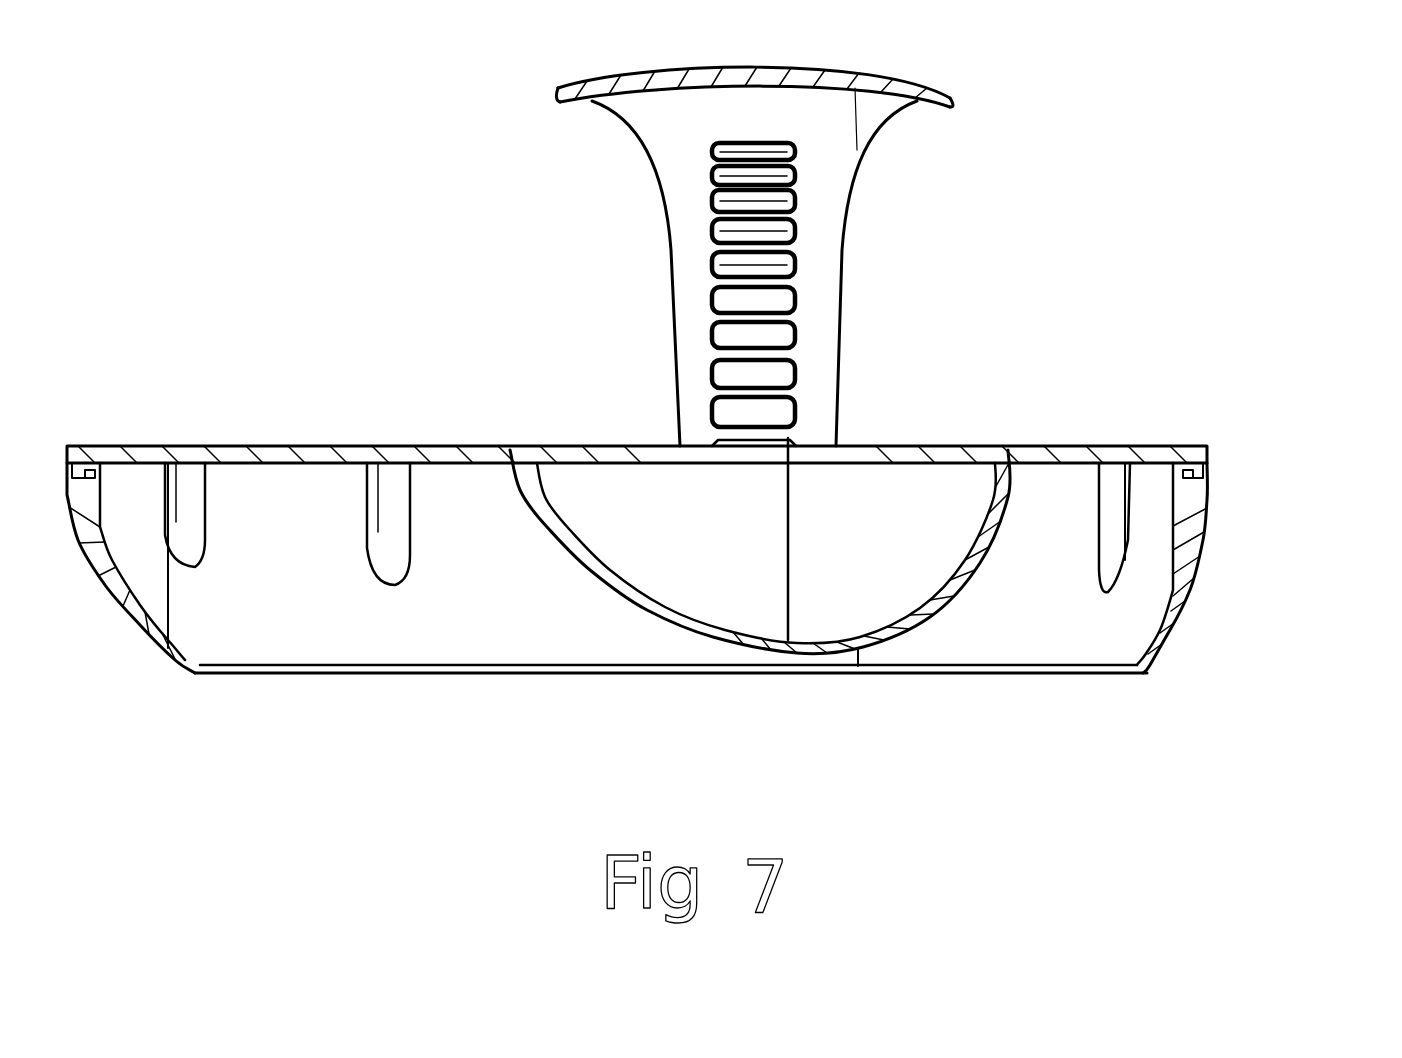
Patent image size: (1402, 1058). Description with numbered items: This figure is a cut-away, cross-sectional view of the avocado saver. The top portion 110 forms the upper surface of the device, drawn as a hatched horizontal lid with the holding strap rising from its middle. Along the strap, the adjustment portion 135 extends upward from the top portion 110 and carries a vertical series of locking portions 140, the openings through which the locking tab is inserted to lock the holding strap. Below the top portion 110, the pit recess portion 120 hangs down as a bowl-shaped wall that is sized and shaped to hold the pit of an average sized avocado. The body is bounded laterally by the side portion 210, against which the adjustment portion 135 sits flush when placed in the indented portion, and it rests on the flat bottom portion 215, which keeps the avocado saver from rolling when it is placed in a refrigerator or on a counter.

The top portion 110 is at (288, 446).
The pit recess portion 120 is at (923, 502).
The adjustment portion of the holding strap 135 is at (680, 161).
The locking portions of the holding strap 140 is at (770, 333).
The side portion 210 is at (1197, 533).
The flat bottom portion 215 is at (1045, 677).